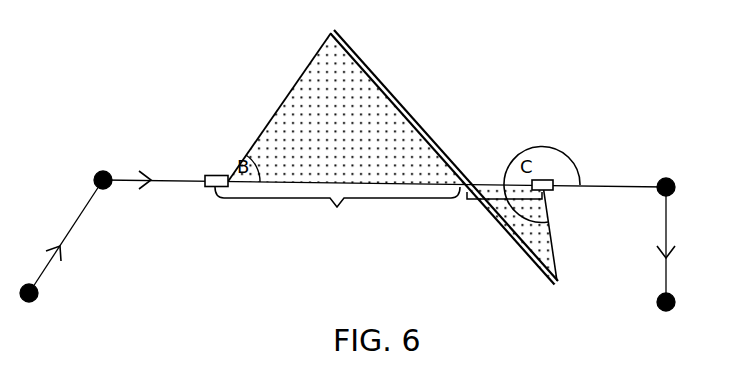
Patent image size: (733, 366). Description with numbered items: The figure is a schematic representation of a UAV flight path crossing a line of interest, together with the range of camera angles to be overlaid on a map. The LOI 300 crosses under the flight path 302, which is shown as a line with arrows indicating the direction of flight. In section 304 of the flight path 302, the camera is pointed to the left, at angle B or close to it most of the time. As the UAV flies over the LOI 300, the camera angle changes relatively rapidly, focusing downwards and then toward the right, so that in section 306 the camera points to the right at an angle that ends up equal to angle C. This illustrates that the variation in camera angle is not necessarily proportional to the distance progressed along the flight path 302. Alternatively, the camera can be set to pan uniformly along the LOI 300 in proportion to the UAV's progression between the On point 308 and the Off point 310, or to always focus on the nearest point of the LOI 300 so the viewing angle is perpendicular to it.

The LOI 300 is at (403, 110).
The flight path 302 is at (618, 185).
The section of the flight path 304 is at (337, 211).
The section of the flight path 306 is at (496, 206).
The On point 308 is at (208, 187).
The Off point 310 is at (553, 189).